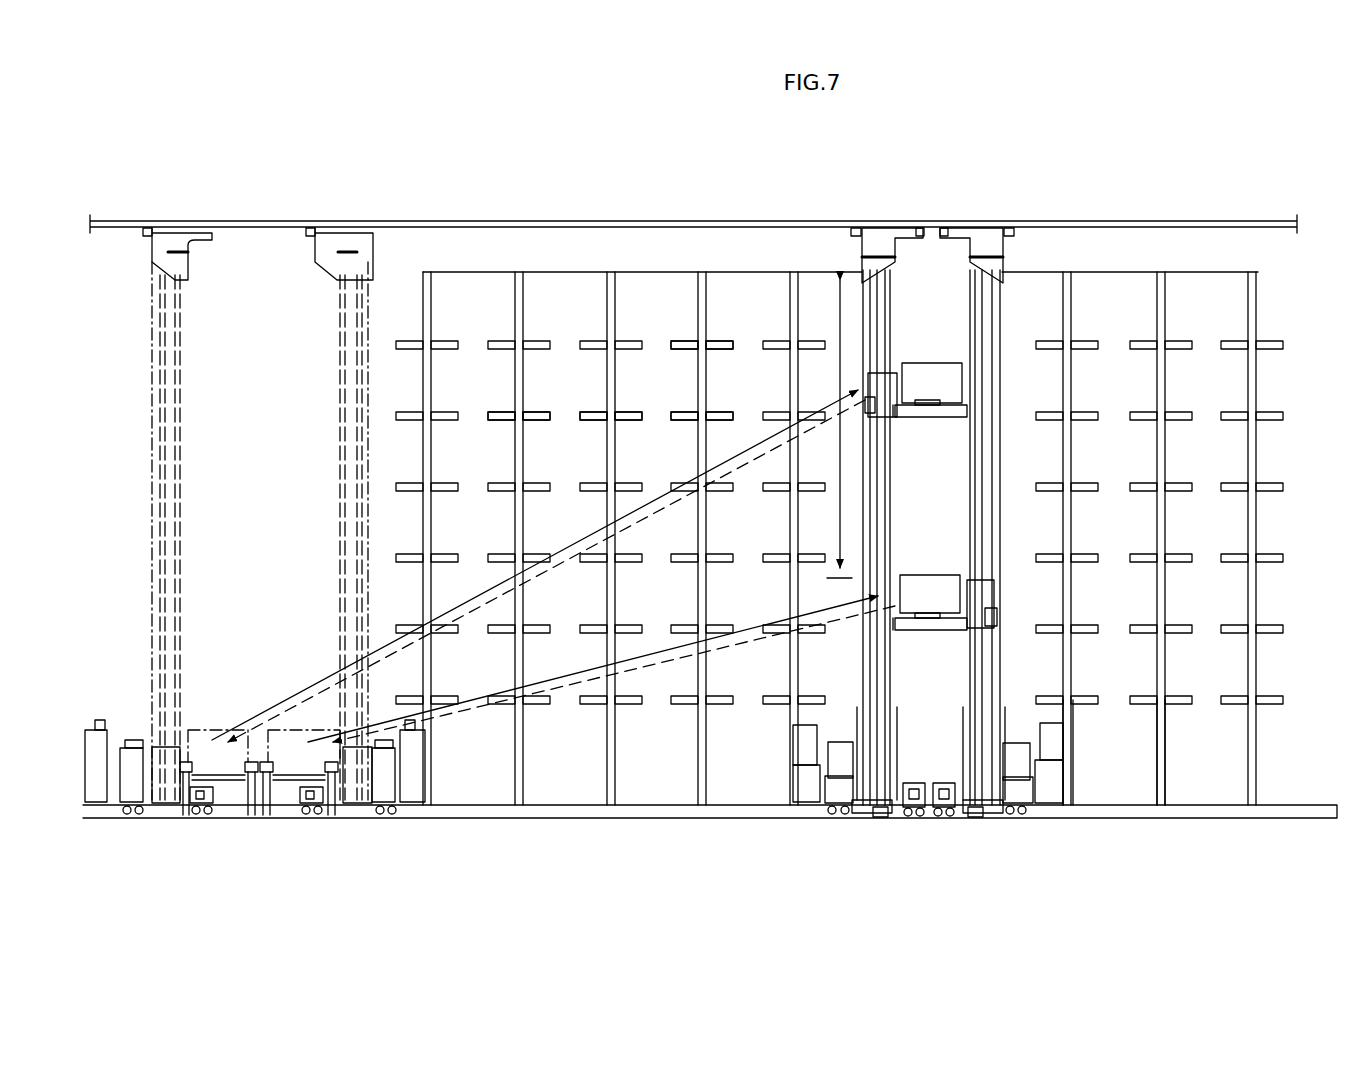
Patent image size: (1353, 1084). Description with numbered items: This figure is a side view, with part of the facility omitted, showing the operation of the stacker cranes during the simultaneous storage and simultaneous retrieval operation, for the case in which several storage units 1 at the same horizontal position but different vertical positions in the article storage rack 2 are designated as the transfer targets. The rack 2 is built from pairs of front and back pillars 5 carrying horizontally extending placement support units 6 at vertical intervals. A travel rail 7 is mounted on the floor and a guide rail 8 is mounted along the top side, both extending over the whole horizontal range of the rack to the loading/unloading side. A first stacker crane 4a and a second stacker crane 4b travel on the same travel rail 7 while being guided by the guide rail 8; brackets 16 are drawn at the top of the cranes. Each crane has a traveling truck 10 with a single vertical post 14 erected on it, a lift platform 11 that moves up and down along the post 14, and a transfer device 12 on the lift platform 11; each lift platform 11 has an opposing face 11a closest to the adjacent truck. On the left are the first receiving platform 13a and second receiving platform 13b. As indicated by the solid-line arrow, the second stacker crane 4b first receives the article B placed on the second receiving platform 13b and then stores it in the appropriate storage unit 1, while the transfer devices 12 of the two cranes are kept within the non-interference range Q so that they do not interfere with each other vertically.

The storage unit 1 is at (903, 492).
The article storage rack 2 is at (732, 265).
The first stacker crane 4a is at (838, 822).
The second stacker crane 4b is at (1040, 865).
The pillar 5 is at (1067, 770).
The placement support unit 6 is at (596, 422).
The travel rail 7 is at (497, 818).
The guide rail 8 is at (487, 220).
The traveling truck 10 is at (862, 820).
The lift platform 11 is at (930, 417).
The opposing face 11a is at (968, 412).
The transfer device 12 is at (935, 402).
The first receiving platform 13a is at (198, 815).
The second receiving platform 13b is at (305, 815).
The vertical post 14 is at (870, 630).
The upper guide bracket 16 is at (877, 250).
The article B is at (924, 370).
The non-interference range Q is at (834, 429).